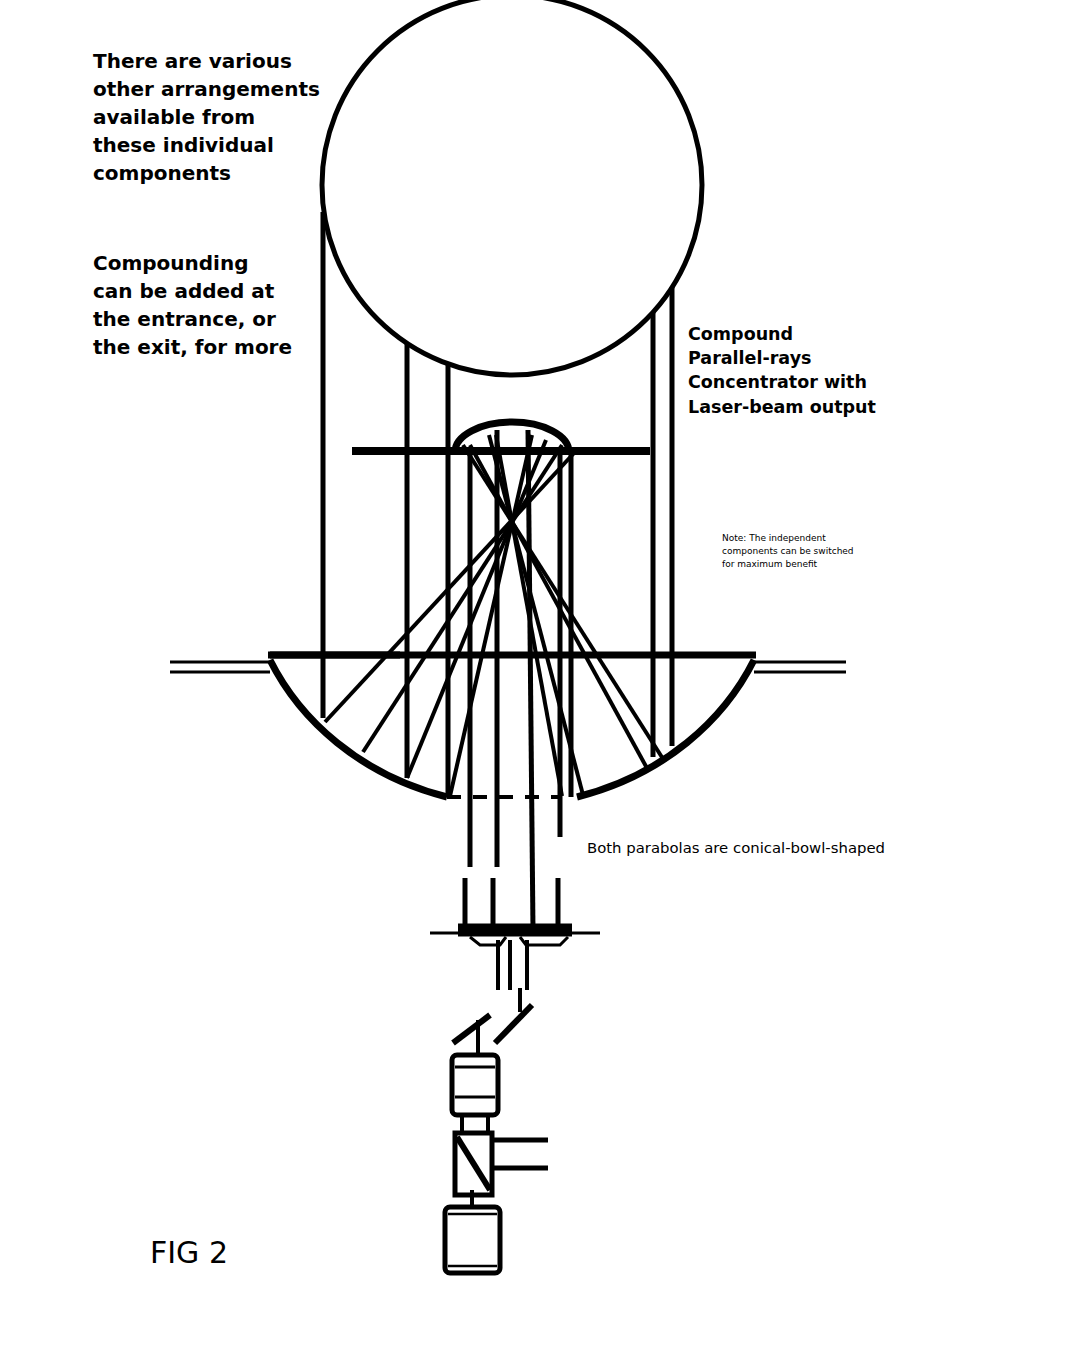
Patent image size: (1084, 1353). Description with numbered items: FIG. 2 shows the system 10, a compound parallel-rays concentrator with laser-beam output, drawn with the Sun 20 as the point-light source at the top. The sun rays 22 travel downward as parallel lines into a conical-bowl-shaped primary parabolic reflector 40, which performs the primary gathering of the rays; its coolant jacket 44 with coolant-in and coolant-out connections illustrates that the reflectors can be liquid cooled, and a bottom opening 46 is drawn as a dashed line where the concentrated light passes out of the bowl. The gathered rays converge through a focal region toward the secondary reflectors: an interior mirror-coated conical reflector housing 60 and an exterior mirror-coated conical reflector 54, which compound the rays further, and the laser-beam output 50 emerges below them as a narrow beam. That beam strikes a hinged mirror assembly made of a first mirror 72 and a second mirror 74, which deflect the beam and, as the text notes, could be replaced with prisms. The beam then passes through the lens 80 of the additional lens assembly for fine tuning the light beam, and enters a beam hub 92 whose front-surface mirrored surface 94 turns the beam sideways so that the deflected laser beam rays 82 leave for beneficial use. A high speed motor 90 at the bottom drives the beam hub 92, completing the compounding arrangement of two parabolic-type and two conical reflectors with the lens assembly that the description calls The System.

The system 10 is at (508, 636).
The Sun 20 is at (512, 187).
The sun rays 22 is at (497, 504).
The primary parabolic reflector 40 is at (508, 735).
The coolant jacket 44 is at (336, 670).
The bottom opening of primary reflector 46 is at (503, 783).
The laser-beam output 50 is at (417, 976).
The exterior mirror-coated conical reflector 54 is at (568, 914).
The interior mirror-coated conical reflector/housing 60 is at (485, 686).
The hinged mirror 72 is at (477, 1035).
The hinged mirror 74 is at (513, 1027).
The lens 80 is at (538, 1094).
The deflected laser beam rays 82 is at (624, 1154).
The high speed motor 90 is at (612, 1240).
The beam hub 92 is at (383, 1170).
The front surface mirrored surface 94 is at (382, 1163).